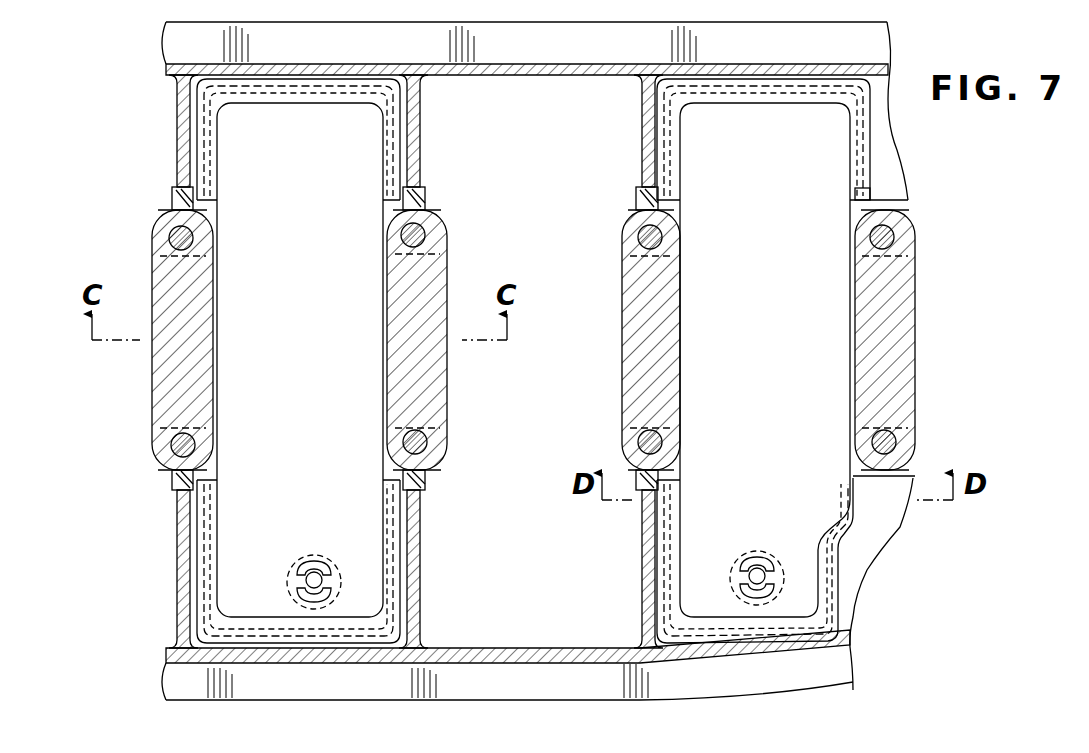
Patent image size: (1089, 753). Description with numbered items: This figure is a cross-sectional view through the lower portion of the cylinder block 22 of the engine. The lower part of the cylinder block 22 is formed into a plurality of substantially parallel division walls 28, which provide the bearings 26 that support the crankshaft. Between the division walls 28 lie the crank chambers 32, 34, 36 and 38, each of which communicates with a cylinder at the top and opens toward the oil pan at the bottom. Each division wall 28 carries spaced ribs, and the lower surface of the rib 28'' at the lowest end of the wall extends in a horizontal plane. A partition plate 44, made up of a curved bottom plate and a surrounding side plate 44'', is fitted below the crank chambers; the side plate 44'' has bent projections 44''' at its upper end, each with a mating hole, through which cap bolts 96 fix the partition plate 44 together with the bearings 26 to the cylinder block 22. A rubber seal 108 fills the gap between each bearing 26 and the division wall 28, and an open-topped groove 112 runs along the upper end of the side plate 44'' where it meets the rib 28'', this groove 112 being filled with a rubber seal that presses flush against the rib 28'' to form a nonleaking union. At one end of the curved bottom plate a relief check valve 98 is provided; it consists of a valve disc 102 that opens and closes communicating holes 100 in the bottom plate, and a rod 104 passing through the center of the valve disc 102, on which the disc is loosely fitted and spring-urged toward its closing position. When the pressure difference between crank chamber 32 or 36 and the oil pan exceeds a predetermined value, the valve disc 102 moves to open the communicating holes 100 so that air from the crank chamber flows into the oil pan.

The cylinder block 22 is at (528, 66).
The bearing 26 is at (158, 408).
The division wall 28 is at (393, 361).
The rib 28'' is at (556, 361).
The crank chamber 32 is at (314, 377).
The crank chamber 34 is at (540, 377).
The crank chamber 36 is at (758, 377).
The crank chamber 38 is at (964, 377).
The partition plate 44 is at (534, 309).
The side plate 44'' is at (496, 361).
The bent projection 44''' is at (530, 343).
The cap bolt 96 is at (194, 238).
The relief check valve 98 is at (341, 560).
The communicating hole 100 is at (312, 572).
The valve disc 102 is at (297, 590).
The rod 104 is at (305, 580).
The rubber seal 108 is at (172, 196).
The groove 112 is at (298, 88).